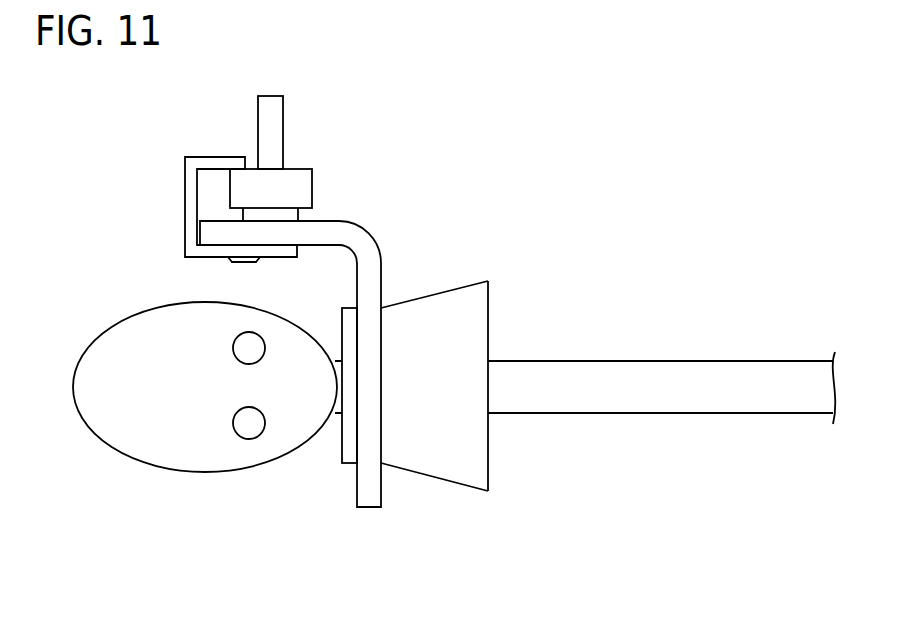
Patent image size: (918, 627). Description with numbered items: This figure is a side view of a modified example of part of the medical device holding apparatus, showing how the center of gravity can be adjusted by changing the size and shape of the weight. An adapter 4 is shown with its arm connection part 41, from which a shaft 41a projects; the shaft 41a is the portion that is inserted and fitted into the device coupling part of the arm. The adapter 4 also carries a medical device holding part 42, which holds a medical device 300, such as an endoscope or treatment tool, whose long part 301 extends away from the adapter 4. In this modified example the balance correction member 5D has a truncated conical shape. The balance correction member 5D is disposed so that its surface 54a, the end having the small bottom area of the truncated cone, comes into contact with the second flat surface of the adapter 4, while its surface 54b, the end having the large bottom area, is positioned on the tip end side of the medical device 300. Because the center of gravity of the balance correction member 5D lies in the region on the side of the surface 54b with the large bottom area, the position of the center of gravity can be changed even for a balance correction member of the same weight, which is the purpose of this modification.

The adapter 4 is at (299, 397).
The balance correction member 5D is at (478, 422).
The arm connection part 41 is at (310, 167).
The shaft 41a is at (272, 117).
The medical device holding part 42 is at (347, 453).
The surface having a small bottom area 54a is at (367, 505).
The surface having a large bottom area 54b is at (488, 319).
The medical device 300 is at (109, 456).
The long part 301 is at (778, 402).